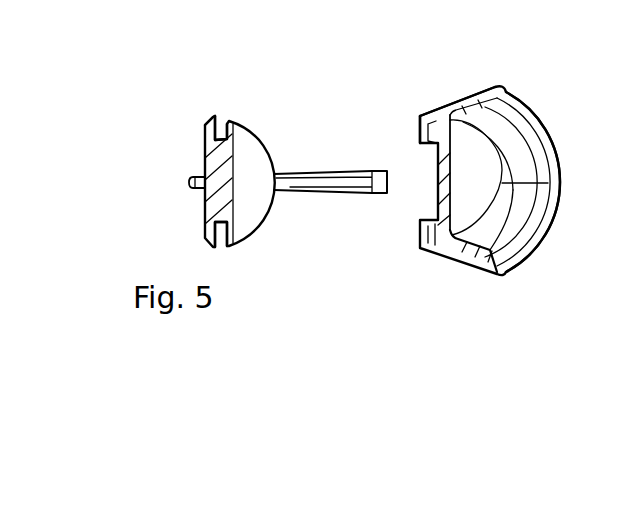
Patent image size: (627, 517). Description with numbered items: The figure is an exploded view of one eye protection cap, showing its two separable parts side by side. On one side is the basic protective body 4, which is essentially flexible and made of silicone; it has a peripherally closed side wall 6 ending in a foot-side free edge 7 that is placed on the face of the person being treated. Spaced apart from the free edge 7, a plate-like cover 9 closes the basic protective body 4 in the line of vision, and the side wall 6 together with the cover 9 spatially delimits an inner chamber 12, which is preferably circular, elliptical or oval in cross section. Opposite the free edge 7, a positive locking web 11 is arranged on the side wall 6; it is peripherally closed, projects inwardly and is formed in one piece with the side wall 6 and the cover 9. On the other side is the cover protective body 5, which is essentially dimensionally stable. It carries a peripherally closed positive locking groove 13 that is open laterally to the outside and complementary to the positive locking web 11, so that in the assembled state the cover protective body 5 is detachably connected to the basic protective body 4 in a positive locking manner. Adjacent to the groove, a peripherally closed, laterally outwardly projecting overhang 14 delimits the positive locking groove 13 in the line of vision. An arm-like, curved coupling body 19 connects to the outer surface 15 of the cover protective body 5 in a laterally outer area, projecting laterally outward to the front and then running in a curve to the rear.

The basic protective body 4 is at (469, 102).
The cover protective body 5 is at (205, 160).
The side wall 6 is at (455, 110).
The free edge 7 is at (533, 118).
The cover 9 is at (445, 160).
The positive locking web 11 is at (418, 136).
The inner chamber 12 is at (525, 200).
The positive locking groove 13 is at (219, 133).
The overhang 14 is at (212, 112).
The outer surface 15 is at (205, 222).
The coupling body 19 is at (317, 172).